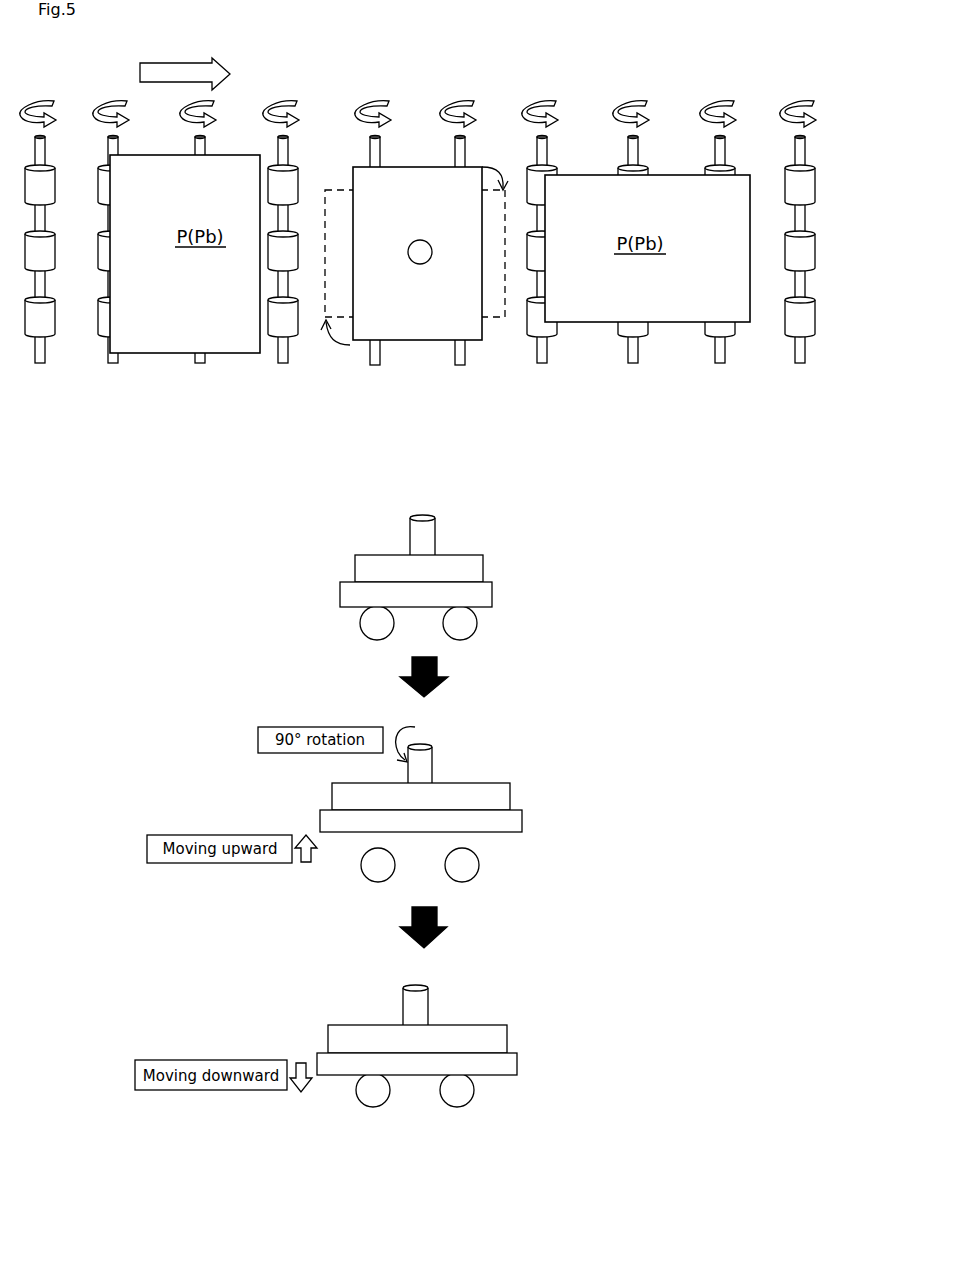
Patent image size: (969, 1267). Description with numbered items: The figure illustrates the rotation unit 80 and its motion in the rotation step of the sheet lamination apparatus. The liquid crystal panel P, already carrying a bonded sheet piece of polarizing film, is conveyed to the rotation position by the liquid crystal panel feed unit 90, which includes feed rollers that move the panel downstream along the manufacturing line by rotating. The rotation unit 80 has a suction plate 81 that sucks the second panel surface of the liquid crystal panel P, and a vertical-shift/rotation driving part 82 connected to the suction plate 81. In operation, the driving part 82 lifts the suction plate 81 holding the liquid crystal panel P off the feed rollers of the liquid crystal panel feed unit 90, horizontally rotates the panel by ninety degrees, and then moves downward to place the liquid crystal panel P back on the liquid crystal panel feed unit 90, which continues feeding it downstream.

The rotation unit 80 is at (392, 349).
The suction plate 81 is at (420, 330).
The vertical-shift/rotation driving part 82 is at (424, 264).
The liquid crystal panel feed unit 90 is at (37, 373).
The liquid crystal panel P is at (485, 601).